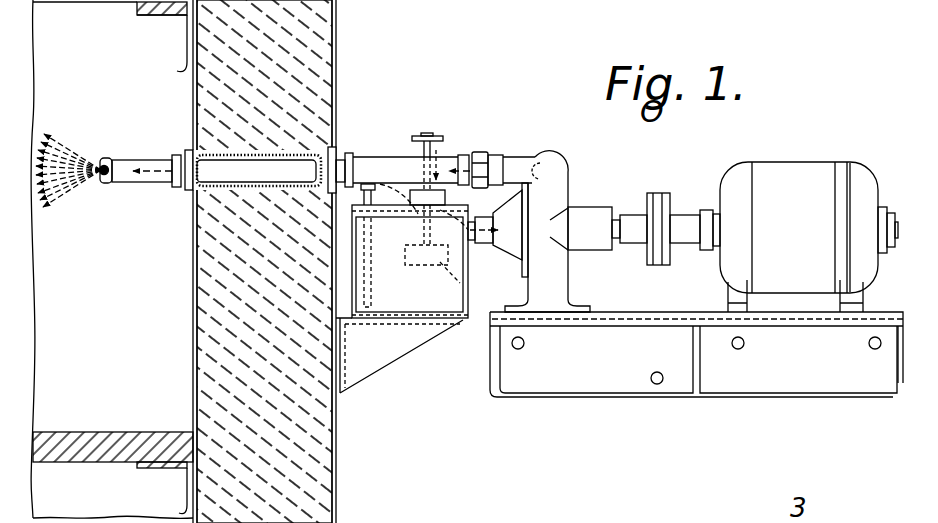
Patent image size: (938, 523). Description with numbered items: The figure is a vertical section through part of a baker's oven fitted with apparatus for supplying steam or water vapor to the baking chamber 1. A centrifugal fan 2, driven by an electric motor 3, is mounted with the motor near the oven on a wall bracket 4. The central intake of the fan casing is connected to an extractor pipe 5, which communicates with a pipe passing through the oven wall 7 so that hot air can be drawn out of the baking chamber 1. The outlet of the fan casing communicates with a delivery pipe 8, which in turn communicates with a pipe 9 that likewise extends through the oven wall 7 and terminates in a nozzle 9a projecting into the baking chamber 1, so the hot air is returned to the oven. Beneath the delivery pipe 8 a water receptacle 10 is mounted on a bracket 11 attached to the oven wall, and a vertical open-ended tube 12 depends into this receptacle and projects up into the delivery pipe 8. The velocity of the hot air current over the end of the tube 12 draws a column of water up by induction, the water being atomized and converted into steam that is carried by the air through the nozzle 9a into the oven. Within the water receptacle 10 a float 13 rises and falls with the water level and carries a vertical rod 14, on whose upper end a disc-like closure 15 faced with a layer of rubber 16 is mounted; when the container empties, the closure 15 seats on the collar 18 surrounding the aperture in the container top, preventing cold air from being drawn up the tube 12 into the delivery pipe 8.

The baking chamber 1 is at (177, 70).
The fan 2 is at (550, 225).
The electric motor 3 is at (770, 176).
The wall bracket 4 is at (805, 362).
The extractor pipe 5 is at (550, 197).
The oven wall 7 is at (312, 474).
The delivery pipe 8 is at (402, 165).
The pipe 9 is at (235, 172).
The nozzle 9a is at (122, 172).
The water receptacle 10 is at (413, 320).
The bracket 11 is at (368, 358).
The vertical open-ended tube 12 is at (407, 292).
The float 13 is at (469, 284).
The vertical rod 14 is at (413, 140).
The disc-like closure 15 is at (440, 142).
The layer of rubber 16 is at (445, 147).
The collar 18 is at (470, 186).